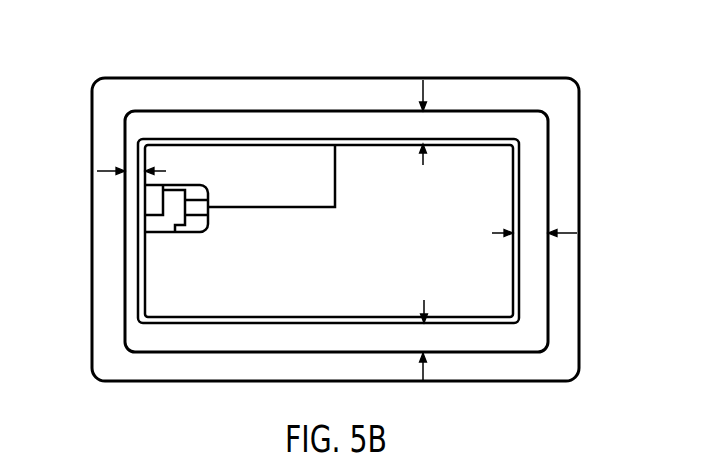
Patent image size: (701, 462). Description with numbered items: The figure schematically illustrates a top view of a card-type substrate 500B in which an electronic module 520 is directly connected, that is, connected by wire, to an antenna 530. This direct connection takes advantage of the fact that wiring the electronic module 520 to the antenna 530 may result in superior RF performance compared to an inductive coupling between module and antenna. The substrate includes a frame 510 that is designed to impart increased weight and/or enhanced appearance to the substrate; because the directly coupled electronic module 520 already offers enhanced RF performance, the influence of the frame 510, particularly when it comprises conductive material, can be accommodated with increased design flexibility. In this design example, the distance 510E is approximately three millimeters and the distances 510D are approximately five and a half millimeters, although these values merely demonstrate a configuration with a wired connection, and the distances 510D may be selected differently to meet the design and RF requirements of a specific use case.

The card-type substrate 500B is at (510, 92).
The frame 510 is at (548, 265).
The distance 510E is at (98, 168).
The distances 510D is at (500, 233).
The electronic module 520 is at (178, 186).
The antenna 530 is at (456, 128).